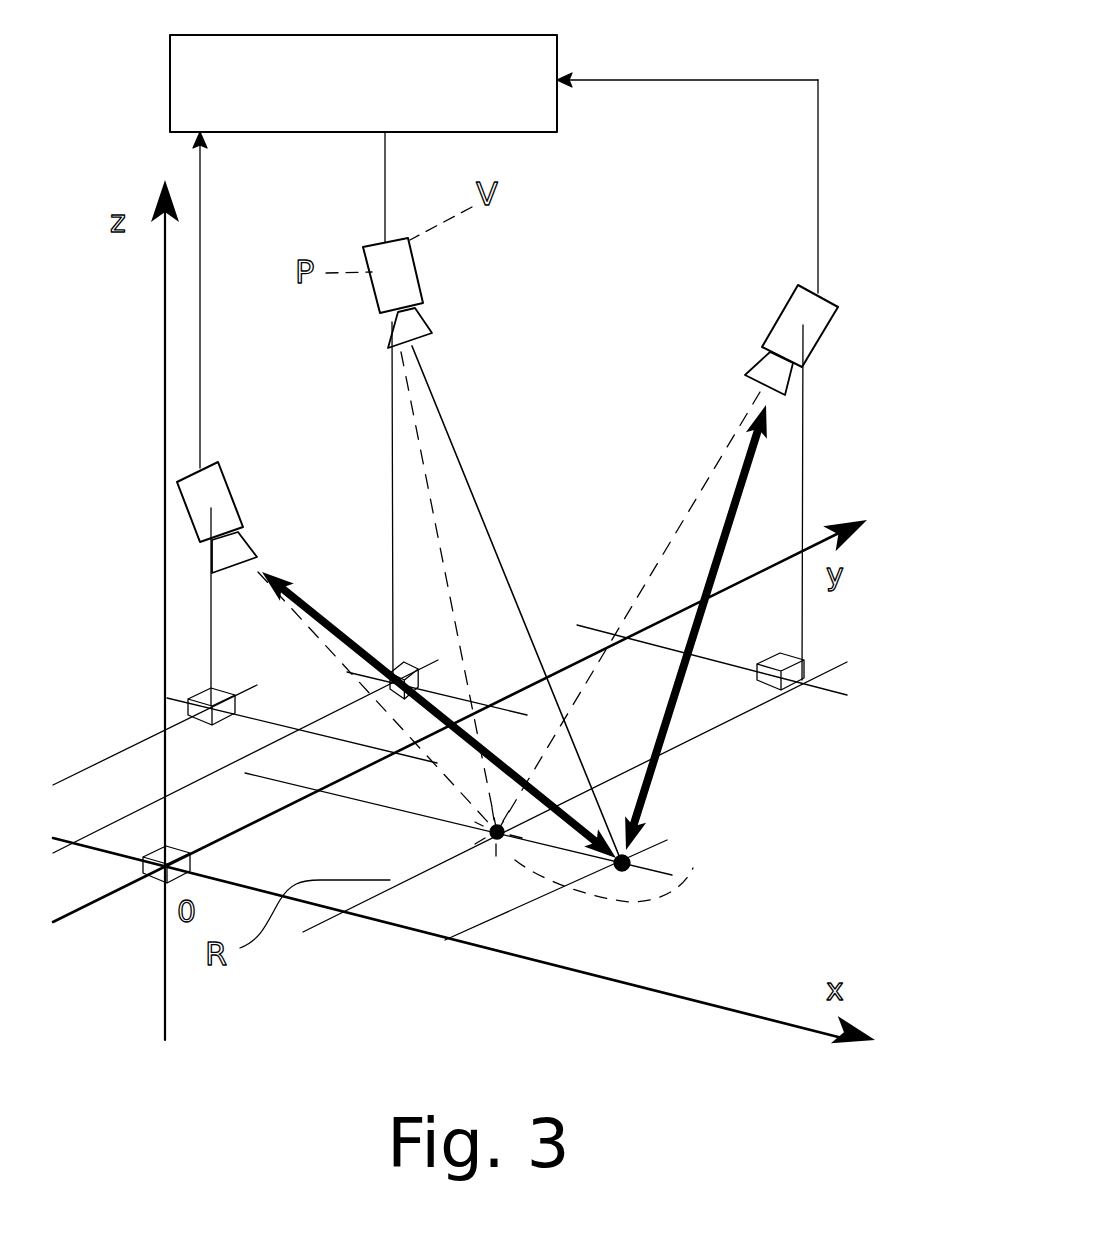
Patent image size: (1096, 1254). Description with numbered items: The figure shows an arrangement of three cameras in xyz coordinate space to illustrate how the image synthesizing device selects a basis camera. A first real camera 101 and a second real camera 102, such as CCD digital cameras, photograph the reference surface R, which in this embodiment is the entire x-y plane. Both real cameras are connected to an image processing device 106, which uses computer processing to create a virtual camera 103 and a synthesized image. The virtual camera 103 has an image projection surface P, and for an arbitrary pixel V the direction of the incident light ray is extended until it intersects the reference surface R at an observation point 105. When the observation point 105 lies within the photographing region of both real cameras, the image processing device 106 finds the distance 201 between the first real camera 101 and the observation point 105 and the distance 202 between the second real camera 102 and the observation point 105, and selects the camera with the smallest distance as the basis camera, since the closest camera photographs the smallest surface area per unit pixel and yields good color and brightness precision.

The first real camera 101 is at (822, 300).
The second real camera 102 is at (222, 482).
The virtual camera 103 is at (405, 272).
The observation point 105 is at (632, 862).
The image processing device 106 is at (557, 52).
The distance 201 is at (657, 777).
The distance 202 is at (348, 628).